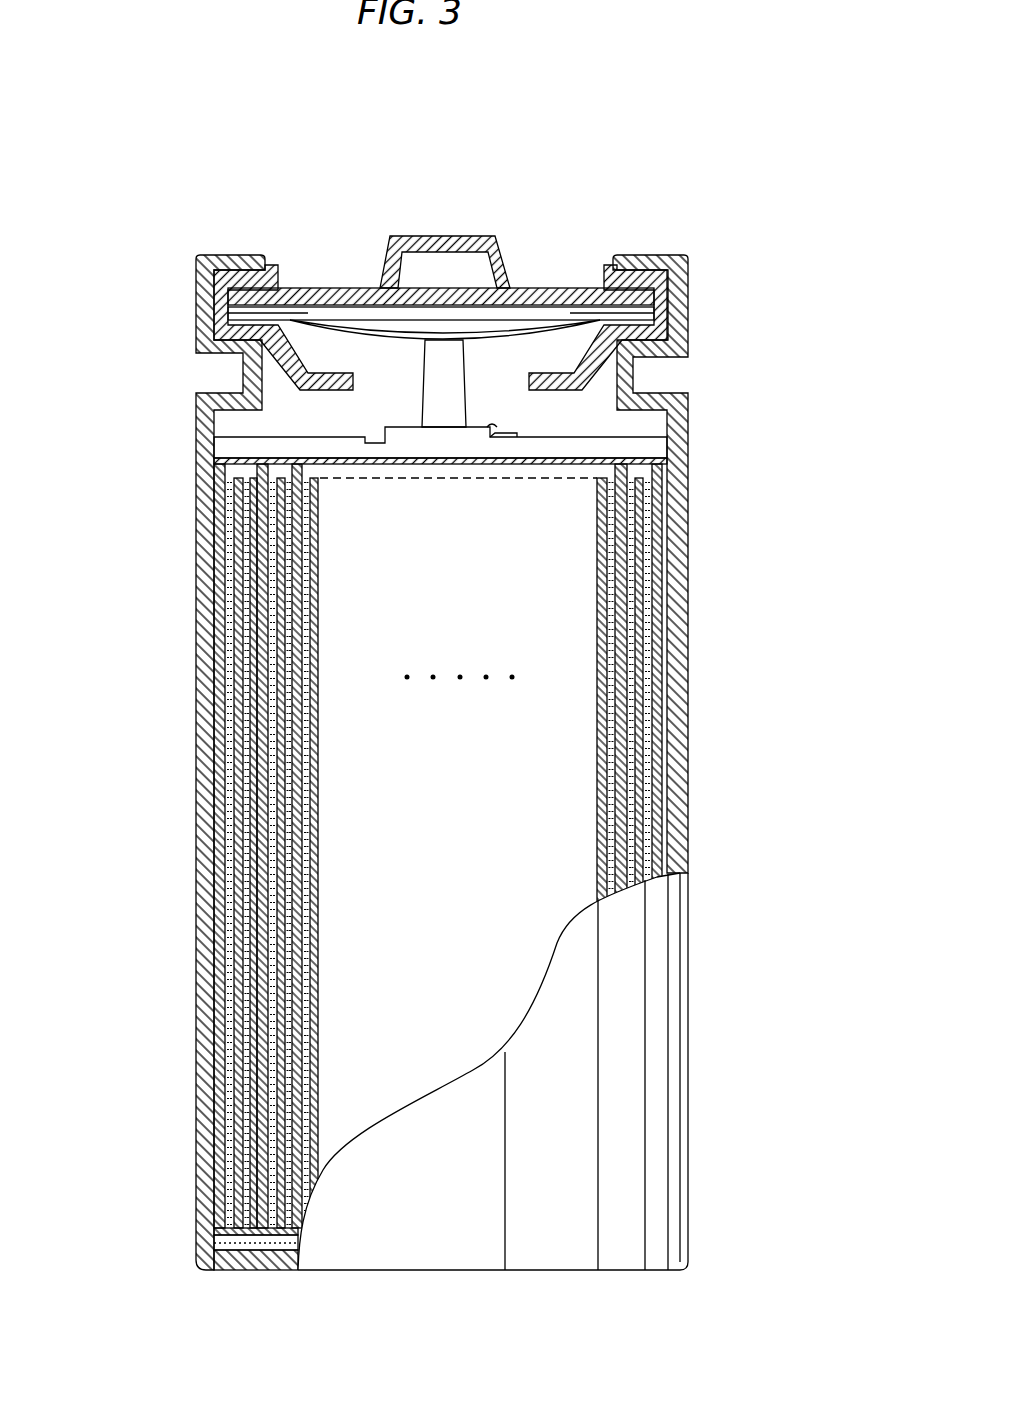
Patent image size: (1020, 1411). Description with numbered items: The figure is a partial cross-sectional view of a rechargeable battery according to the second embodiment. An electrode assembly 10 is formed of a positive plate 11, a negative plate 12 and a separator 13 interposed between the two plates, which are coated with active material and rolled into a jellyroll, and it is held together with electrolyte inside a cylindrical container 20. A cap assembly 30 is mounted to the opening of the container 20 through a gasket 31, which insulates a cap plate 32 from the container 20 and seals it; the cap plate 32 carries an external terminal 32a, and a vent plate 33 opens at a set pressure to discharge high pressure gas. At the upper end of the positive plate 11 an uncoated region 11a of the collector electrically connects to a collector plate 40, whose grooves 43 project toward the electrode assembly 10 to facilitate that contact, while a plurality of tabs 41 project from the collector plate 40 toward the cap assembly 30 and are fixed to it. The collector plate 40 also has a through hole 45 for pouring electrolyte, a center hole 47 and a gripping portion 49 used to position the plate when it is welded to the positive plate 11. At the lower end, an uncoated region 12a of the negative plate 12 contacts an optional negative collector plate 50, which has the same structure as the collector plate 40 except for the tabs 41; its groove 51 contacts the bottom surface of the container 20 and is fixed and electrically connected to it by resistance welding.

The electrode assembly 10 is at (428, 897).
The positive plate 11 is at (222, 551).
The uncoated region 11a is at (216, 473).
The negative plate 12 is at (241, 1160).
The uncoated region 12a is at (212, 1241).
The separator 13 is at (250, 742).
The container 20 is at (690, 648).
The cap assembly 30 is at (427, 289).
The gasket 31 is at (223, 260).
The cap plate 32 is at (356, 290).
The external terminal 32a is at (460, 238).
The vent plate 33 is at (308, 317).
The collector plate 40 is at (473, 399).
The tabs 41 is at (463, 355).
The groove 43 is at (668, 458).
The through hole 45 is at (587, 457).
The center hole 47 is at (493, 428).
The gripping portion 49 is at (495, 433).
The negative collector plate 50 is at (253, 1248).
The groove 51 is at (268, 1268).